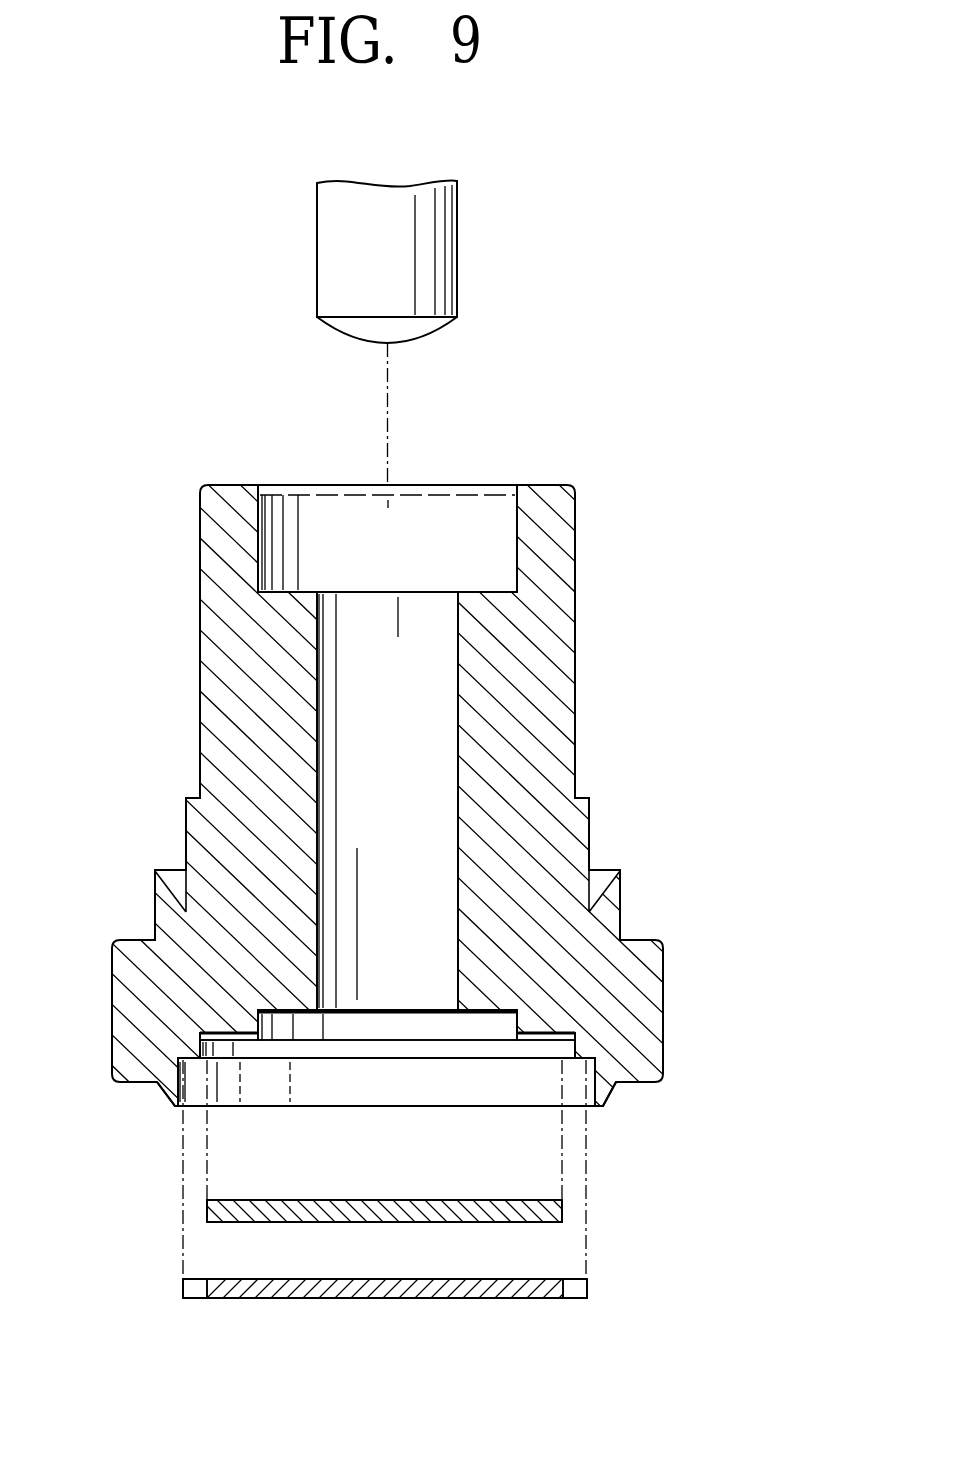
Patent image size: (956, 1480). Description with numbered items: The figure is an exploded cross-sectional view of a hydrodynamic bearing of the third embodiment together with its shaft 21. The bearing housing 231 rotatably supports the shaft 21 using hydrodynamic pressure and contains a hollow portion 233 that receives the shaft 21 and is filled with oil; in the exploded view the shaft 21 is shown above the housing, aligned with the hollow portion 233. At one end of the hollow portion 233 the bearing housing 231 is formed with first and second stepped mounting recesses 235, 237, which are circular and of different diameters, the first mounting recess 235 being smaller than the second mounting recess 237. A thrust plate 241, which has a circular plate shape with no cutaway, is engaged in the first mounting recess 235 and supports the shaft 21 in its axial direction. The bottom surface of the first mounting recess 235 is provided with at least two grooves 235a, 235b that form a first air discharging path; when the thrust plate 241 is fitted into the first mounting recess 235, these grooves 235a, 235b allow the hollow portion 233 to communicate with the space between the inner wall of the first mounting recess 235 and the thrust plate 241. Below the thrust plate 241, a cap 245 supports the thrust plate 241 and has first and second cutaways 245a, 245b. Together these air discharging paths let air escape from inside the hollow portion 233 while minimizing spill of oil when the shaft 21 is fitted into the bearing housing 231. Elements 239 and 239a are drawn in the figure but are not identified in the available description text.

The shaft 21 is at (453, 248).
The bearing housing 231 is at (560, 681).
The hollow portion 233 is at (425, 818).
The first mounting recess 235 is at (475, 1045).
The groove 235a is at (535, 1041).
The groove 235b is at (228, 1040).
The second mounting recess 237 is at (577, 1063).
The ring plate 239 is at (604, 1098).
The chamfered portion 239a is at (183, 1093).
The thrust plate 241 is at (215, 1205).
The cap 245 is at (412, 1300).
The first cutaway 245a is at (190, 1296).
The second cutaway 245b is at (576, 1300).